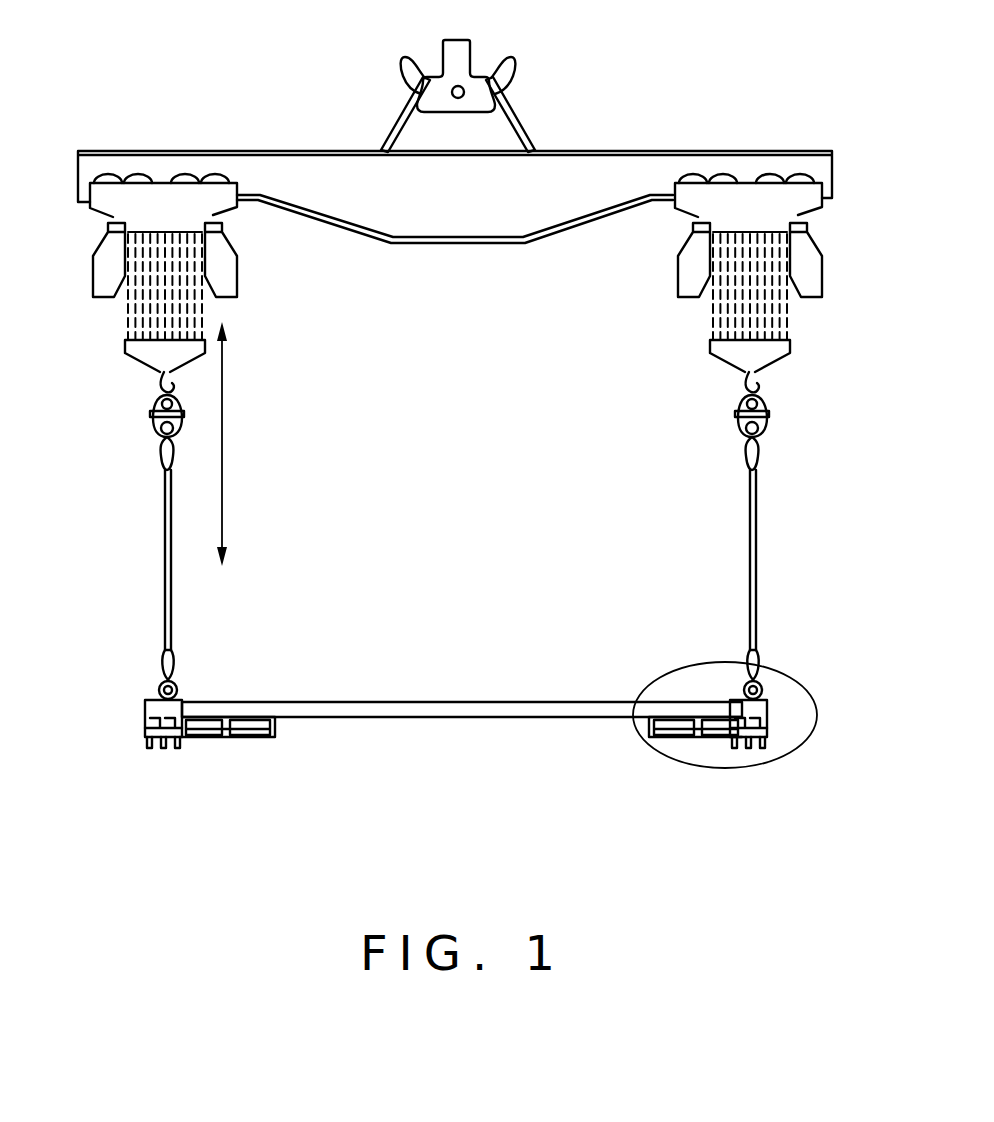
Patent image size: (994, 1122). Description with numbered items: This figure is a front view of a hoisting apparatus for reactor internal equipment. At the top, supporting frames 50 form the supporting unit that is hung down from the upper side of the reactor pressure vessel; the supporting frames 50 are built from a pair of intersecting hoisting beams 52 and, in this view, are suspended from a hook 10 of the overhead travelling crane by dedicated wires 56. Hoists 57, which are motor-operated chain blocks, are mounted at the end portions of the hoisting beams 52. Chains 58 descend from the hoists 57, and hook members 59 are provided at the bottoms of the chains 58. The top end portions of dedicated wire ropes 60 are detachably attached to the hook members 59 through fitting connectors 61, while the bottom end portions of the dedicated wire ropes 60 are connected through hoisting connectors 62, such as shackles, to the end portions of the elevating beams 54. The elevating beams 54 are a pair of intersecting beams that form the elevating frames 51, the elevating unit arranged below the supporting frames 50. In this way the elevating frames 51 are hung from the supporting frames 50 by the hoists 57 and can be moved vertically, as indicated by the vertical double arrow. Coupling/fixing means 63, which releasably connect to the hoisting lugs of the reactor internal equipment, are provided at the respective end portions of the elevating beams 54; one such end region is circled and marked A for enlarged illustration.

The hook 10 is at (462, 60).
The supporting frames 50 is at (668, 151).
The elevating frames 51 is at (489, 701).
The hoisting beams 52 is at (300, 151).
The elevating beams 54 is at (372, 702).
The dedicated wires 56 is at (520, 117).
The hoists 57 is at (239, 270).
The chains 58 is at (128, 314).
The hook members 59 is at (125, 348).
The dedicated wire ropes 60 is at (173, 606).
The fitting connectors 61 is at (152, 408).
The hoisting connectors 62 is at (159, 690).
The coupling/fixing means 63 is at (725, 748).
The enlarged region A is at (783, 675).